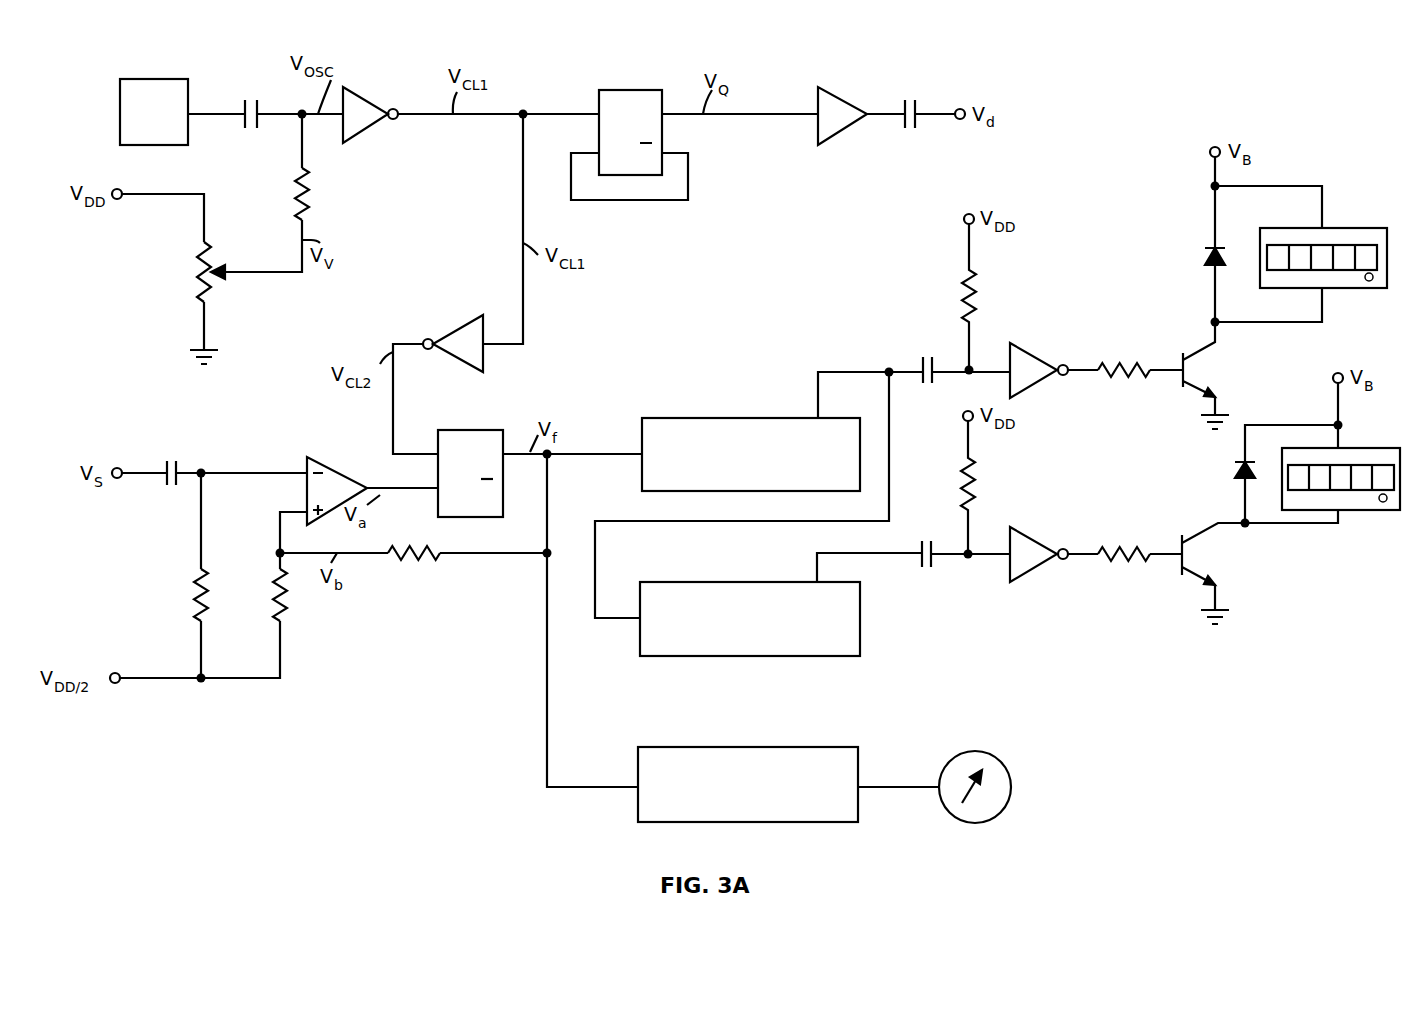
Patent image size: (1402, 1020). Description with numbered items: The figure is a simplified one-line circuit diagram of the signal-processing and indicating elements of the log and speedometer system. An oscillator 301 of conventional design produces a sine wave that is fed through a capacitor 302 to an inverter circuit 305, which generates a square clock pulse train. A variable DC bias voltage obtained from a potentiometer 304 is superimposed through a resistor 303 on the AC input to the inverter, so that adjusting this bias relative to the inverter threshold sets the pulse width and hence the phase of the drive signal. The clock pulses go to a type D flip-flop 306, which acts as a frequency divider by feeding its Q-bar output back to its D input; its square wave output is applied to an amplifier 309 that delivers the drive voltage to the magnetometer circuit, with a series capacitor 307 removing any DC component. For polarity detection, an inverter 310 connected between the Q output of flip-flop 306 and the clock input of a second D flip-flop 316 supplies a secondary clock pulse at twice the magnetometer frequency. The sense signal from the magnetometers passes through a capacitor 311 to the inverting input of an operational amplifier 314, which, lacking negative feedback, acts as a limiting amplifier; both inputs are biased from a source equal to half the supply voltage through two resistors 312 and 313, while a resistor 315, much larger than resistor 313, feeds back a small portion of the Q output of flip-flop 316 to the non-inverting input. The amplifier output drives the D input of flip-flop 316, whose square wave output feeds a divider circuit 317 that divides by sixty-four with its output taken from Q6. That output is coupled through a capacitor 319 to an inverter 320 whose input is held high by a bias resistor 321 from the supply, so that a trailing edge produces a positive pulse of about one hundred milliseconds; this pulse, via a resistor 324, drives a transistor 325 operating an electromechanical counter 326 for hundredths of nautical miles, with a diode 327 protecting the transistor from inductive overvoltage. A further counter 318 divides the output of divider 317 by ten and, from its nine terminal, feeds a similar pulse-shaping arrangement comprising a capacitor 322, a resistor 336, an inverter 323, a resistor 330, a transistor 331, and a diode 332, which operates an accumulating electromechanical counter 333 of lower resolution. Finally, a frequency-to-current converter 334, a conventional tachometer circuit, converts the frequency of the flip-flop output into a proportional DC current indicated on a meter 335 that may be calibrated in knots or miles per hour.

The oscillator 301 is at (182, 98).
The capacitor 302 is at (258, 100).
The resistor 303 is at (325, 194).
The potentiometer 304 is at (191, 272).
The inverter circuit 305 is at (370, 107).
The type D flip-flop 306 is at (629, 130).
The series capacitor 307 is at (930, 100).
The amplifier 309 is at (861, 110).
The inverter 310 is at (453, 337).
The capacitor 311 is at (172, 459).
The resistor 312 is at (178, 595).
The resistor 313 is at (261, 595).
The operational amplifier 314 is at (336, 476).
The resistor 315 is at (414, 539).
The D flip-flop 316 is at (470, 461).
The divider circuit 317 is at (751, 441).
The counter 318 is at (750, 605).
The capacitor 319 is at (921, 360).
The inverter 320 is at (1039, 360).
The bias resistor 321 is at (947, 297).
The capacitor 322 is at (930, 540).
The inverter 323 is at (1039, 545).
The resistor 324 is at (1124, 356).
The transistor 325 is at (1217, 375).
The electromechanical counter 326 is at (1301, 254).
The diode 327 is at (1188, 239).
The resistor 330 is at (1124, 540).
The transistor 331 is at (1213, 573).
The diode 332 is at (1260, 453).
The electromechanical counter 333 is at (1322, 474).
The frequency-to-current converter 334 is at (748, 771).
The meter 335 is at (975, 775).
The resistor 336 is at (991, 487).